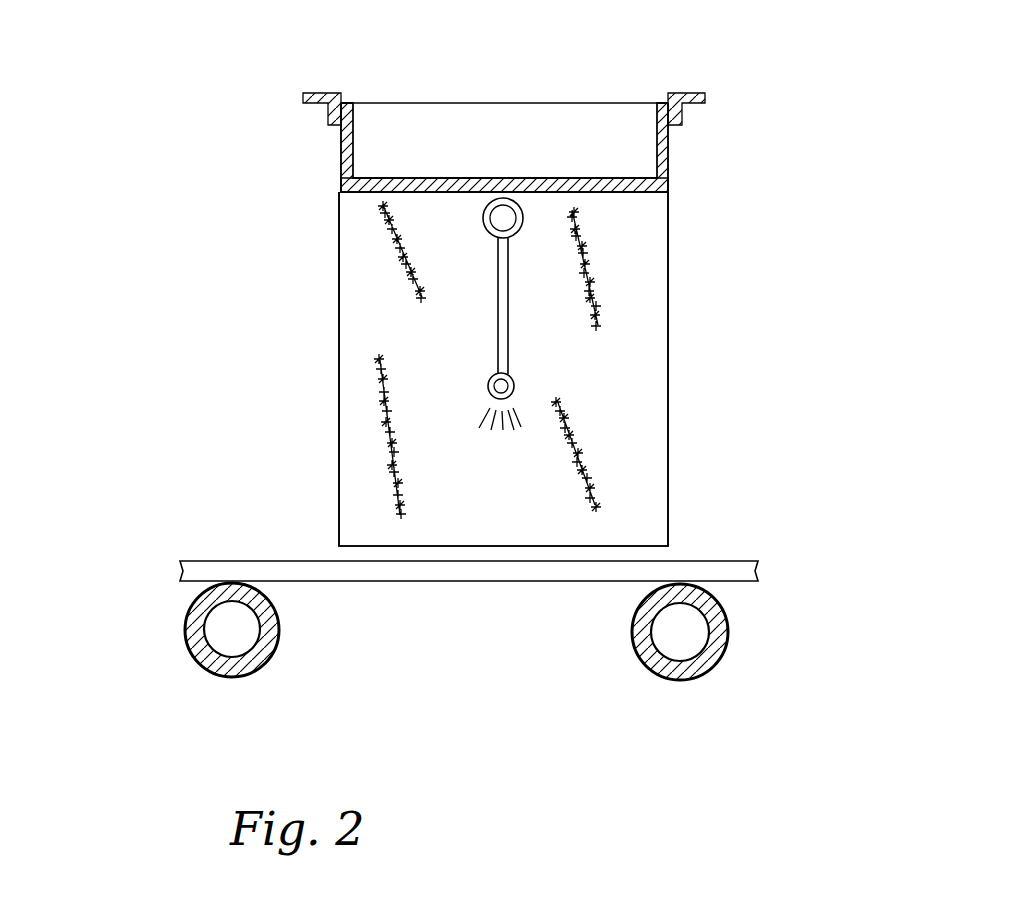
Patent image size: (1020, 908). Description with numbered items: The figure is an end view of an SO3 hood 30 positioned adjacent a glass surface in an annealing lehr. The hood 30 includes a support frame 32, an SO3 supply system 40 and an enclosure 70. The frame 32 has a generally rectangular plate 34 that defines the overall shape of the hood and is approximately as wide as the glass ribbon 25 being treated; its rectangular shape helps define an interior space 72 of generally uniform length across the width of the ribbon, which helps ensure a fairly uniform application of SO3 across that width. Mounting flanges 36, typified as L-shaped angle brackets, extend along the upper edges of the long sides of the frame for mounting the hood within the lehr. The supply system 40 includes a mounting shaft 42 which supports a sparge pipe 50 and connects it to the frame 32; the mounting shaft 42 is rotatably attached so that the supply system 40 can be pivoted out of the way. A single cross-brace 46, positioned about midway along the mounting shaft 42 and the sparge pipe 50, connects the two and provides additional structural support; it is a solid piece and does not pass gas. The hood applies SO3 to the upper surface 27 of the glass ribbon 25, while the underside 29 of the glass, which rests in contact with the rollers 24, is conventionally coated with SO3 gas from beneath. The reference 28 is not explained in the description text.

The rollers 24 is at (210, 672).
The glass ribbon 25 is at (760, 580).
The upper surface 27 is at (178, 565).
The tray interior / water reservoir 28 is at (515, 158).
The underside 29 is at (495, 585).
The SO3 hood 30 is at (257, 173).
The support frame 32 is at (573, 103).
The rectangular plate 34 is at (600, 178).
The mounting flanges 36 is at (322, 93).
The SO3 supply system 40 is at (515, 287).
The mounting shaft 42 is at (524, 216).
The cross-brace 46 is at (505, 335).
The sparge pipe 50 is at (515, 386).
The enclosure 70 is at (338, 372).
The interior space 72 is at (513, 500).